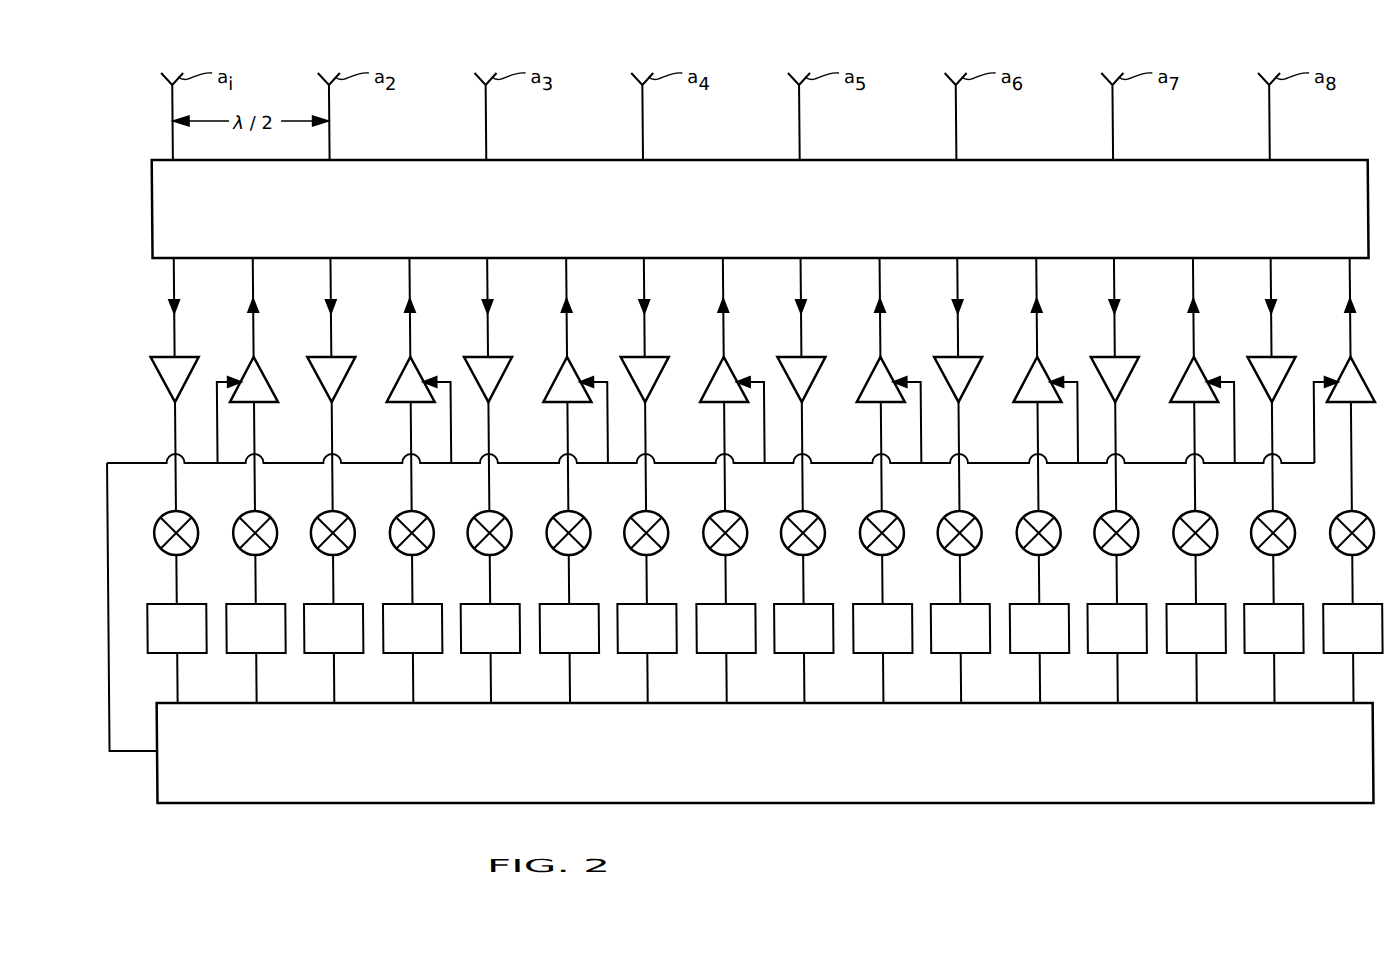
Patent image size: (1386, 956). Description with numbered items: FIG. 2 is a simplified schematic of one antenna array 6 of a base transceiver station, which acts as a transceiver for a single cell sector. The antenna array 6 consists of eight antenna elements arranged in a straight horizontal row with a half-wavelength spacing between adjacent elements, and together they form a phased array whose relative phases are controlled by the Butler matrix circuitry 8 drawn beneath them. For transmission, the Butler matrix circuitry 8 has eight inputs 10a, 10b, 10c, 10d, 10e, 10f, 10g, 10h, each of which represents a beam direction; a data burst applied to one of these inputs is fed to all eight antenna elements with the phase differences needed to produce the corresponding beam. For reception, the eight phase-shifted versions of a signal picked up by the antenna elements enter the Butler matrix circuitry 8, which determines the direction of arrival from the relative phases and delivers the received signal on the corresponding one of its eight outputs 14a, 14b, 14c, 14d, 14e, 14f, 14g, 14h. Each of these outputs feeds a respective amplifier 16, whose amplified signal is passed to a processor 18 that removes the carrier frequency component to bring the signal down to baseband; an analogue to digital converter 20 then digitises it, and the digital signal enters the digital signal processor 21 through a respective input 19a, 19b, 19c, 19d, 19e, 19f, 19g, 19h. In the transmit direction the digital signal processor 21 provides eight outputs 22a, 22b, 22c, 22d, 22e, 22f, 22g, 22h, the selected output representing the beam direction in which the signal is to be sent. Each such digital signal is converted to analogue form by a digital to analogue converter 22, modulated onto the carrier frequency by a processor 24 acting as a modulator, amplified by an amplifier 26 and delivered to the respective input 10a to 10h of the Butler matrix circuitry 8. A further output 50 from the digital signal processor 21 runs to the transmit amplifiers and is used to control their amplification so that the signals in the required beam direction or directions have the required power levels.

The antenna array 6 is at (1243, 52).
The Butler matrix circuitry 8 is at (1312, 168).
The input 10a is at (224, 307).
The input 10b is at (380, 307).
The input 10c is at (537, 307).
The input 10d is at (694, 307).
The input 10e is at (851, 307).
The input 10f is at (1009, 307).
The input 10g is at (1164, 307).
The input 10h is at (1320, 307).
The output 14a is at (145, 307).
The output 14b is at (301, 307).
The output 14c is at (458, 307).
The output 14d is at (615, 307).
The output 14e is at (772, 307).
The output 14f is at (930, 307).
The output 14g is at (1085, 307).
The output 14h is at (1241, 307).
The amplifier 16 is at (715, 359).
The amplifier 26 is at (792, 359).
The processor 18 is at (711, 514).
The processor 24 is at (790, 514).
The analogue to digital converter 20 is at (713, 608).
The digital to analogue converter 22 is at (792, 608).
The input 19a is at (147, 678).
The input 19b is at (305, 678).
The input 19c is at (462, 678).
The input 19d is at (618, 678).
The input 19e is at (774, 678).
The input 19f is at (933, 678).
The input 19g is at (1088, 678).
The input 19h is at (1245, 678).
The output 22a is at (226, 678).
The output 22b is at (384, 678).
The output 22c is at (541, 678).
The output 22d is at (697, 678).
The output 22e is at (853, 678).
The output 22f is at (1012, 678).
The output 22g is at (1167, 678).
The output 22h is at (1324, 678).
The output 50 is at (141, 755).
The digital signal processor 21 is at (201, 803).